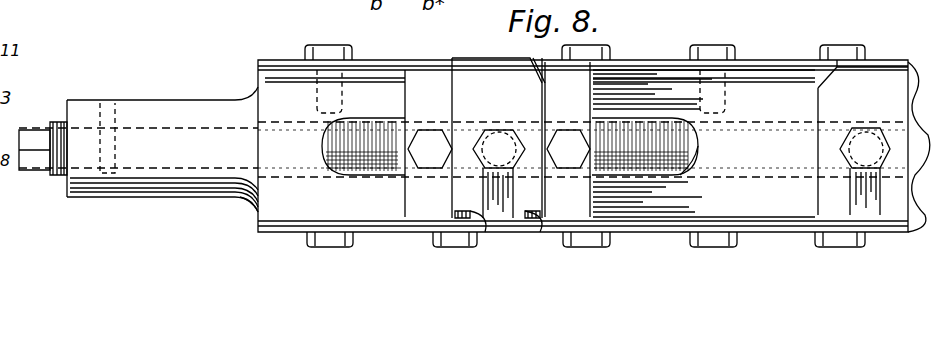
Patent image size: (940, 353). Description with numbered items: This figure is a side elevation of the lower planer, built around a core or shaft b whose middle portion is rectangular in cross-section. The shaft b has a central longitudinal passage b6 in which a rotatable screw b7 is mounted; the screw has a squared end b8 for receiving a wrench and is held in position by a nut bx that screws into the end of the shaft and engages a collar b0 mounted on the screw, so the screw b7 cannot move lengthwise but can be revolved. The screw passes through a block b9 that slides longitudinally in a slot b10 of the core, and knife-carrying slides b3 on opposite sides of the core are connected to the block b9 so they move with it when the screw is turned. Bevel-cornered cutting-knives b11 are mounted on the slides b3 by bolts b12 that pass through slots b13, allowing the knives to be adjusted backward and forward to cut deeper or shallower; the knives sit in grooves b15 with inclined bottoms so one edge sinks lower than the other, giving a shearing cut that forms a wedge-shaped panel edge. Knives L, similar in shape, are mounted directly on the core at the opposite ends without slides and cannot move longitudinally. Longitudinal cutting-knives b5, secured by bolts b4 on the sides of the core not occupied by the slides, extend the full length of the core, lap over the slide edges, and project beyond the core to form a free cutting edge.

The core or shaft b is at (228, 200).
The collar b0 is at (108, 125).
The squared end b8 is at (30, 132).
The nut bx is at (55, 176).
The central longitudinal passage b6 is at (255, 195).
The bolts b4 is at (822, 46).
The block b9 is at (400, 162).
The knife-carrying slides b3 is at (499, 150).
The bevel-cornered cutting-knives b11 is at (499, 125).
The bolts b12 is at (488, 155).
The rotatable screw b7 is at (690, 145).
The slot b10 is at (688, 158).
The longitudinal cutting-knives b5 is at (642, 256).
The slots b13 is at (525, 232).
The grooves b15 is at (487, 235).
The knives L is at (863, 137).